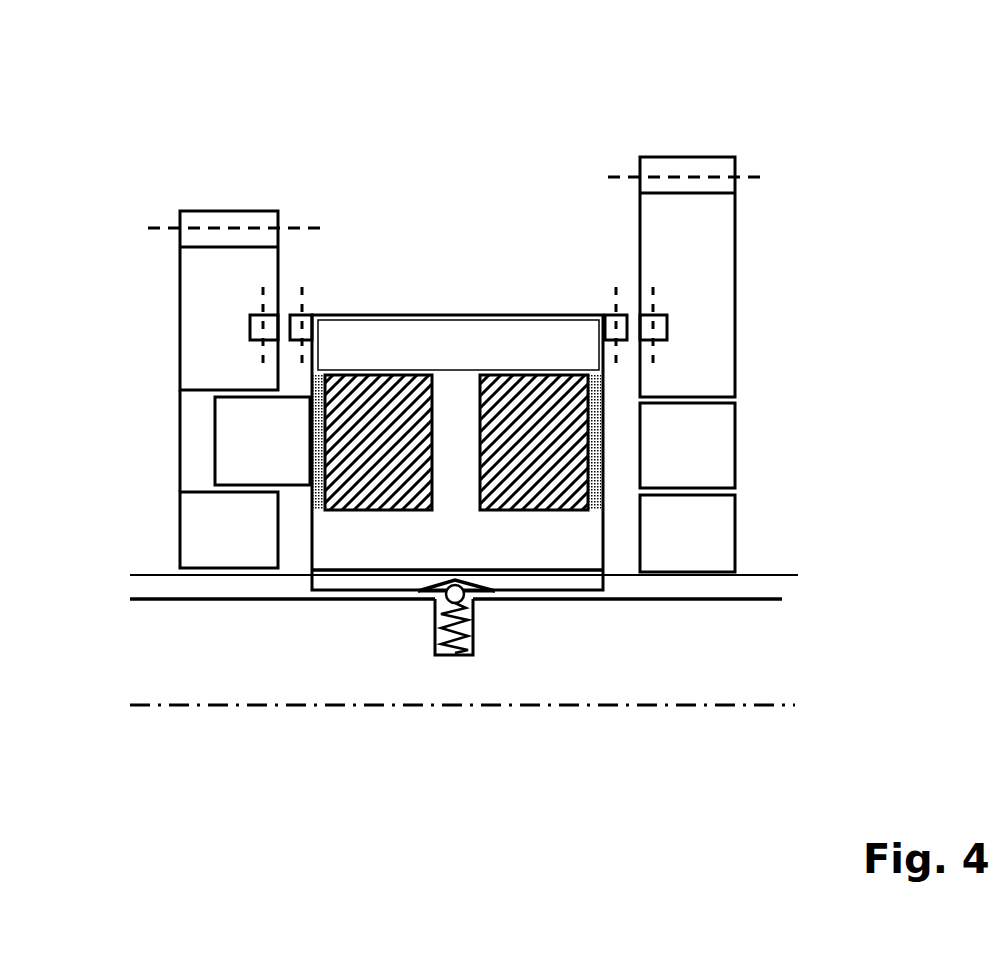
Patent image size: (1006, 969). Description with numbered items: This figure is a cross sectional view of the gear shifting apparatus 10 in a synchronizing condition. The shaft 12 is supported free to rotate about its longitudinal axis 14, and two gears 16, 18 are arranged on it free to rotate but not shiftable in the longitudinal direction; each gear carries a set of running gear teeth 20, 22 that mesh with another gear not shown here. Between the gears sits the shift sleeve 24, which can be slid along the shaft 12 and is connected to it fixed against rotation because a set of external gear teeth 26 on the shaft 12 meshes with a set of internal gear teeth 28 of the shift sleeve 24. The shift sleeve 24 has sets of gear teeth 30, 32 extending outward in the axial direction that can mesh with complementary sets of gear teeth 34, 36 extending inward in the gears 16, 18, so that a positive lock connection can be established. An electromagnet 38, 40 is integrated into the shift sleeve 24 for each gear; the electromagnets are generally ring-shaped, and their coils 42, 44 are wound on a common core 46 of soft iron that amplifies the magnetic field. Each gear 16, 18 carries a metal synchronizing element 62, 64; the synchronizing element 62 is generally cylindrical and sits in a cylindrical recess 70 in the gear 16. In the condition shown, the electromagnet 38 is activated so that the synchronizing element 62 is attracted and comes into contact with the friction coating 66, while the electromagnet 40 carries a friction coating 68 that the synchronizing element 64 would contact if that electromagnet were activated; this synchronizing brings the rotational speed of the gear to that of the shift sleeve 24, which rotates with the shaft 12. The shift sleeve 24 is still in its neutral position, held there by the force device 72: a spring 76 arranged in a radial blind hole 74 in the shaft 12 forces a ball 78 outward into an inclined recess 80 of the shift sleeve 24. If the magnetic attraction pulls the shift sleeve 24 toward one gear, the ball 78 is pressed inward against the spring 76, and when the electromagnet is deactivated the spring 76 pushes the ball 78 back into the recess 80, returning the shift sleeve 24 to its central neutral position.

The gear shifting apparatus 10 is at (545, 106).
The shaft 12 is at (699, 666).
The longitudinal axis 14 is at (194, 704).
The gear 16 is at (208, 301).
The gear 18 is at (673, 243).
The running gear teeth 20 is at (205, 222).
The running gear teeth 22 is at (675, 168).
The shift sleeve 24 is at (519, 286).
The external gear teeth 26 is at (156, 587).
The internal gear teeth 28 is at (556, 591).
The gear teeth 30 is at (302, 318).
The gear teeth 32 is at (610, 318).
The gear teeth 34 is at (250, 323).
The gear teeth 36 is at (667, 329).
The electromagnet 38 is at (360, 535).
The electromagnet 40 is at (518, 535).
The coil 42 is at (352, 466).
The coil 44 is at (520, 466).
The common core 46 is at (498, 363).
The synchronizing element 62 is at (248, 453).
The synchronizing element 64 is at (673, 458).
The friction coating 66 is at (320, 505).
The friction coating 68 is at (597, 513).
The cylindrical recess 70 is at (192, 440).
The force device 72 is at (456, 712).
The blind hole 74 is at (441, 656).
The spring 76 is at (455, 680).
The ball 78 is at (434, 625).
The recess 80 is at (440, 582).